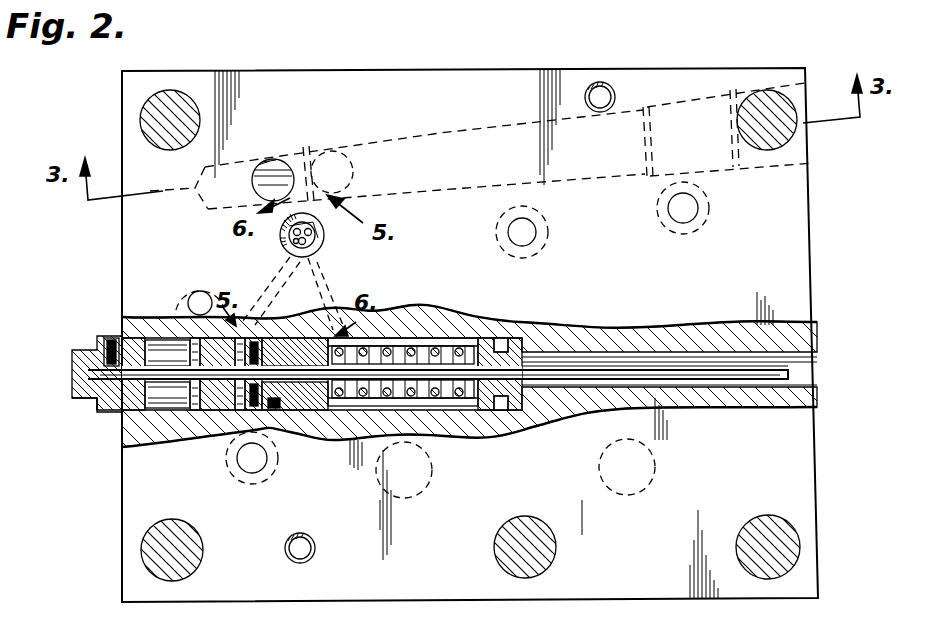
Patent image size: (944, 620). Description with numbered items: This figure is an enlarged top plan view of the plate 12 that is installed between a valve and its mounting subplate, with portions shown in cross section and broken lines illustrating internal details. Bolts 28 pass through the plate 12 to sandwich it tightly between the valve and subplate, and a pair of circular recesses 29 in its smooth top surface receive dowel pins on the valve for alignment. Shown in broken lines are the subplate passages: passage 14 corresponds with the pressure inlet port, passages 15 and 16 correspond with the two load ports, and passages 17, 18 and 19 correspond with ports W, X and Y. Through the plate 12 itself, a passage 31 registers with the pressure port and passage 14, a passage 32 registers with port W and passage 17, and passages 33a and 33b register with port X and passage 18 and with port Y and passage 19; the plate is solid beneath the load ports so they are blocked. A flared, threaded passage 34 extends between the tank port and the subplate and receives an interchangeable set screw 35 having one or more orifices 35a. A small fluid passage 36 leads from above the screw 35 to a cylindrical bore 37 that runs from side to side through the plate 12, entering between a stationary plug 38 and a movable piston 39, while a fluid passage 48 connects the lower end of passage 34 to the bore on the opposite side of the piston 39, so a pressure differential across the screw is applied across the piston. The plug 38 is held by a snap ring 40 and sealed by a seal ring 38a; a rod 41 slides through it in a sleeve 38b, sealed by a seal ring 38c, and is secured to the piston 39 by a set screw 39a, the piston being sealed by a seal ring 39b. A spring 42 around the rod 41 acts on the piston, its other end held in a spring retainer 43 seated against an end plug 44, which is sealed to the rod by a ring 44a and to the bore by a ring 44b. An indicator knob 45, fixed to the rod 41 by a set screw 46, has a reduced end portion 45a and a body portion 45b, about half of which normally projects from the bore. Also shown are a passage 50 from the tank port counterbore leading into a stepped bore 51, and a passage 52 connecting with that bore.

The plate 12 is at (300, 78).
The passage 14 is at (545, 243).
The passage 15 is at (432, 478).
The passage 16 is at (654, 462).
The passage 17 is at (184, 284).
The passage 18 is at (258, 479).
The passage 19 is at (706, 228).
The bolts 28 is at (177, 98).
The circular recesses 29 is at (606, 97).
The passage 31 is at (528, 235).
The passage 32 is at (206, 292).
The passage 33a is at (251, 470).
The passage 33b is at (690, 206).
The passage 34 is at (314, 252).
The set screw 35 is at (323, 233).
The orifices 35a is at (320, 244).
The fluid passage 36 is at (282, 247).
The cylindrical bore 37 is at (150, 432).
The stationary plug 38 is at (200, 418).
The seal ring 38a is at (213, 418).
The sleeve 38b is at (198, 354).
The seal ring 38c is at (198, 390).
The movable piston 39 is at (276, 418).
The set screw 39a is at (288, 338).
The seal ring 39b is at (285, 420).
The snap ring 40 is at (172, 336).
The rod 41 is at (624, 368).
The spring 42 is at (400, 346).
The spring retainer 43 is at (470, 410).
The end plug 44 is at (524, 342).
The ring 44a is at (503, 340).
The ring 44b is at (536, 410).
The indicator knob 45 is at (73, 352).
The end portion 45a is at (80, 396).
The body portion 45b is at (108, 410).
The set screw 46 is at (112, 338).
The fluid passage 48 is at (320, 273).
The passage 50 is at (270, 163).
The stepped bore 51 is at (424, 134).
The passage 52 is at (335, 152).